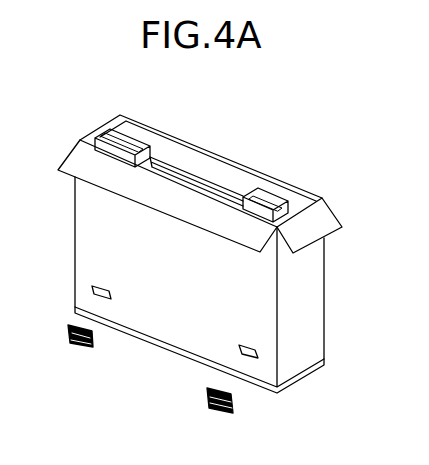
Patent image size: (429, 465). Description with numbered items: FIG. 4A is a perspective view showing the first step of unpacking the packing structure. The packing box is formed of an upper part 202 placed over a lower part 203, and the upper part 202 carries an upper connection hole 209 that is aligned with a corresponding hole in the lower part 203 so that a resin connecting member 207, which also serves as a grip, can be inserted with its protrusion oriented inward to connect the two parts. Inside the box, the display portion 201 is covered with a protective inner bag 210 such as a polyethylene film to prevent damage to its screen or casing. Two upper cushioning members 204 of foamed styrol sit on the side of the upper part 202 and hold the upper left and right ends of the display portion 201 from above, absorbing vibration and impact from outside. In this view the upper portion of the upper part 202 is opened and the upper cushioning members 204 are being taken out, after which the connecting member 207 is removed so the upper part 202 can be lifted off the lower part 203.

The display portion 201 is at (200, 184).
The upper part 202 is at (323, 295).
The lower part 203 is at (297, 386).
The upper cushioning member 204 is at (133, 145).
The connecting member 207 is at (92, 348).
The upper connection hole 209 is at (92, 288).
The inner bag 210 is at (238, 142).